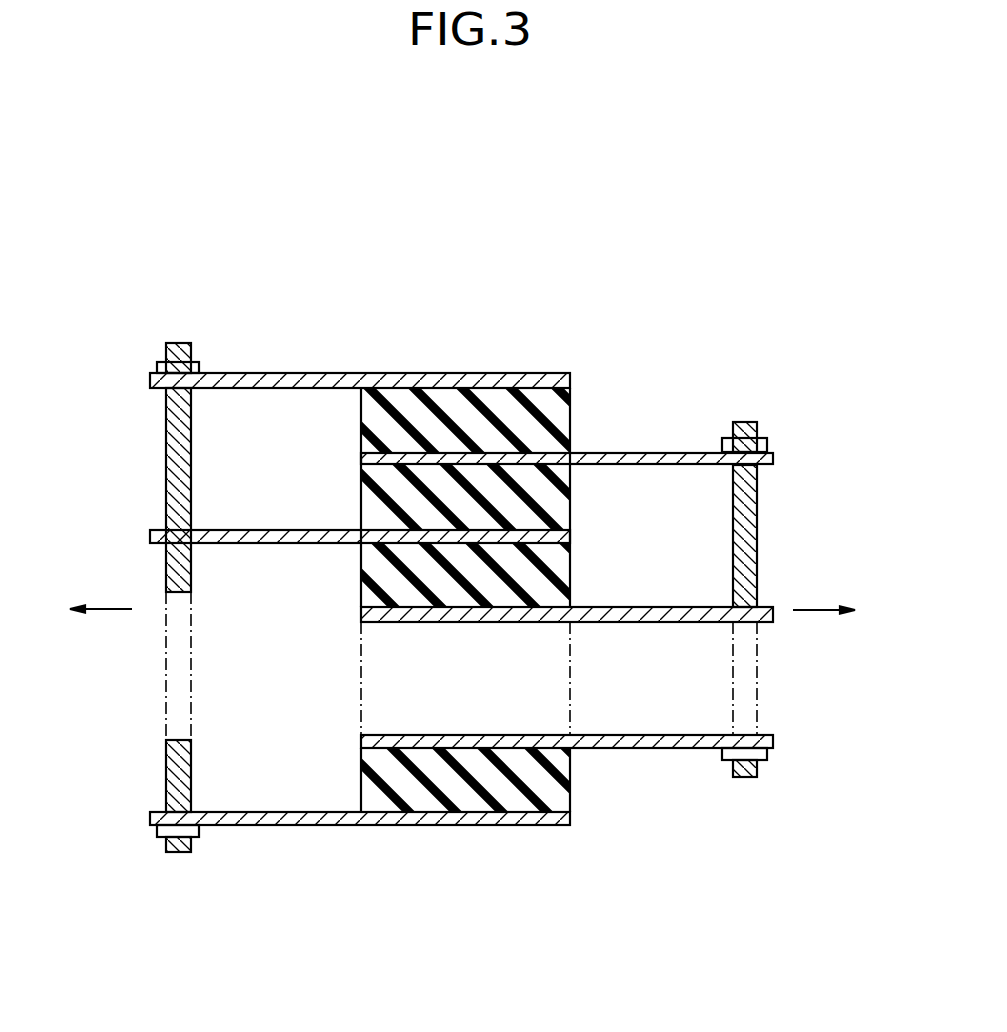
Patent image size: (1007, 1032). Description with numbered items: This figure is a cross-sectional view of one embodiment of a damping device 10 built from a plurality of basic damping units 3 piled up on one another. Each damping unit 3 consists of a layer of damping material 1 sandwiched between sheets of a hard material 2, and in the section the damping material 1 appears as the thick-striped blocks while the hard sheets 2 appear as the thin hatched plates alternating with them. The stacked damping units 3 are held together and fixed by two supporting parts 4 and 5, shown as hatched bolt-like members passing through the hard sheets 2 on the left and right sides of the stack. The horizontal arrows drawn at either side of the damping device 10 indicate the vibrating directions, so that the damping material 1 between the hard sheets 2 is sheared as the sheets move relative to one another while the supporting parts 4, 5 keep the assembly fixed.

The damping material 1 is at (561, 426).
The sheet of hard material 2 is at (518, 377).
The damping unit 3 is at (585, 397).
The supporting part 4 is at (178, 471).
The supporting part 5 is at (753, 528).
The damping device 10 is at (694, 381).